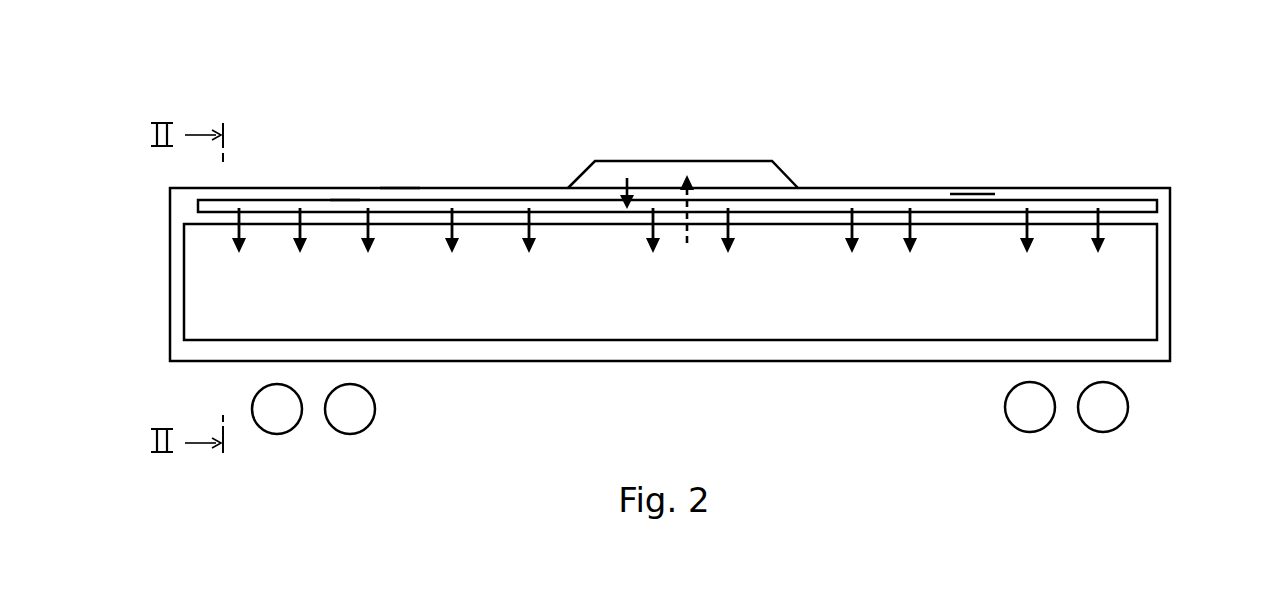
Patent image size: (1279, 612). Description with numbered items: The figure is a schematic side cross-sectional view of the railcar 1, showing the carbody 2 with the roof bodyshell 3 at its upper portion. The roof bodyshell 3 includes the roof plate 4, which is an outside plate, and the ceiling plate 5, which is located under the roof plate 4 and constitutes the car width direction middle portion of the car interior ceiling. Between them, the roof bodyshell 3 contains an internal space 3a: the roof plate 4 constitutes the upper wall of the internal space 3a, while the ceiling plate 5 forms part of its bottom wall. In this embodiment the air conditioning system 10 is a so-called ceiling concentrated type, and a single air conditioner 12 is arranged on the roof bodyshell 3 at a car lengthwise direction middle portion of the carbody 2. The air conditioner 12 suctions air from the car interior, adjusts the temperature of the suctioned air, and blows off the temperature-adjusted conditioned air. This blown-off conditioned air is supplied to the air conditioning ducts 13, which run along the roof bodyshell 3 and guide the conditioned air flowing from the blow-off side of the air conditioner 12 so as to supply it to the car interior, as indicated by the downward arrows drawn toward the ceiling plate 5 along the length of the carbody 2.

The railcar 1 is at (711, 191).
The carbody 2 is at (1165, 184).
The roof bodyshell 3 is at (295, 188).
The internal space 3a is at (340, 199).
The roof plate 4 is at (400, 189).
The ceiling plate 5 is at (422, 228).
The air conditioning system 10 is at (737, 162).
The air conditioner 12 is at (833, 176).
The air conditioning ducts 13 is at (972, 198).